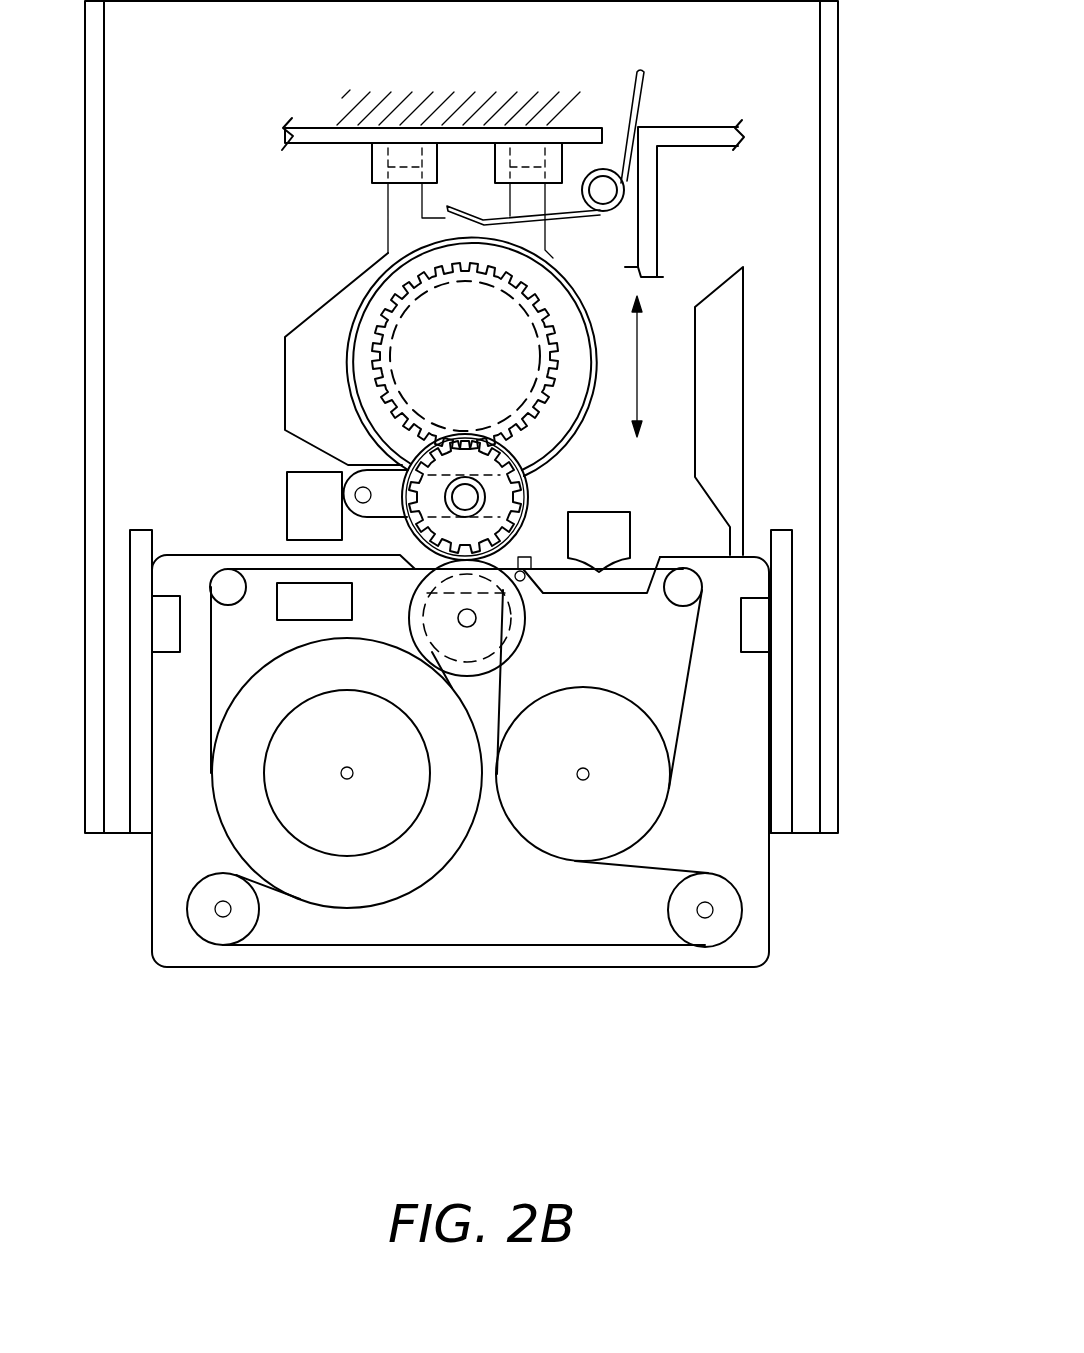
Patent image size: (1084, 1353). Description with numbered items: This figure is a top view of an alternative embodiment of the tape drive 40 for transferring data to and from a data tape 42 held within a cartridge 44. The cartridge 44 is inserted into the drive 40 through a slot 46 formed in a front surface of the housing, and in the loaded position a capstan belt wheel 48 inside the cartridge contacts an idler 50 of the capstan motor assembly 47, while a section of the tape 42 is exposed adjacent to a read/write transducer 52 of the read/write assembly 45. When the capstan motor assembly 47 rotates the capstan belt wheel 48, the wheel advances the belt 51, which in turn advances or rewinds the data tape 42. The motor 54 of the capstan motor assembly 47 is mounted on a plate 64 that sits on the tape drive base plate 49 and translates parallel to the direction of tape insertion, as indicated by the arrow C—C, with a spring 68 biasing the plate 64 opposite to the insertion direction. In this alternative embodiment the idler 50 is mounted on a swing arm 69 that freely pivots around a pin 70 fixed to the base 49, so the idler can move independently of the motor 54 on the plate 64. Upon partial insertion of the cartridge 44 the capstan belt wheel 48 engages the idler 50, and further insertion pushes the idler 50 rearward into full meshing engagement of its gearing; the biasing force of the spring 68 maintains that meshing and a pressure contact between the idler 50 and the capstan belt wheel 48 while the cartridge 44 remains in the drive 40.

The tape drive 40 is at (855, 207).
The data tape 42 is at (673, 757).
The cartridge 44 is at (758, 740).
The read/write assembly 45 is at (632, 520).
The slot 46 is at (776, 838).
The capstan motor assembly 47 is at (320, 401).
The capstan belt wheel 48 is at (520, 617).
The base plate 49 is at (197, 238).
The idler 50 is at (530, 493).
The belt 51 is at (537, 945).
The read/write transducer 52 is at (632, 568).
The motor 54 is at (383, 267).
The plate 64 is at (297, 327).
The spring 68 is at (643, 100).
The swing arm 69 is at (355, 517).
The pin 70 is at (358, 497).